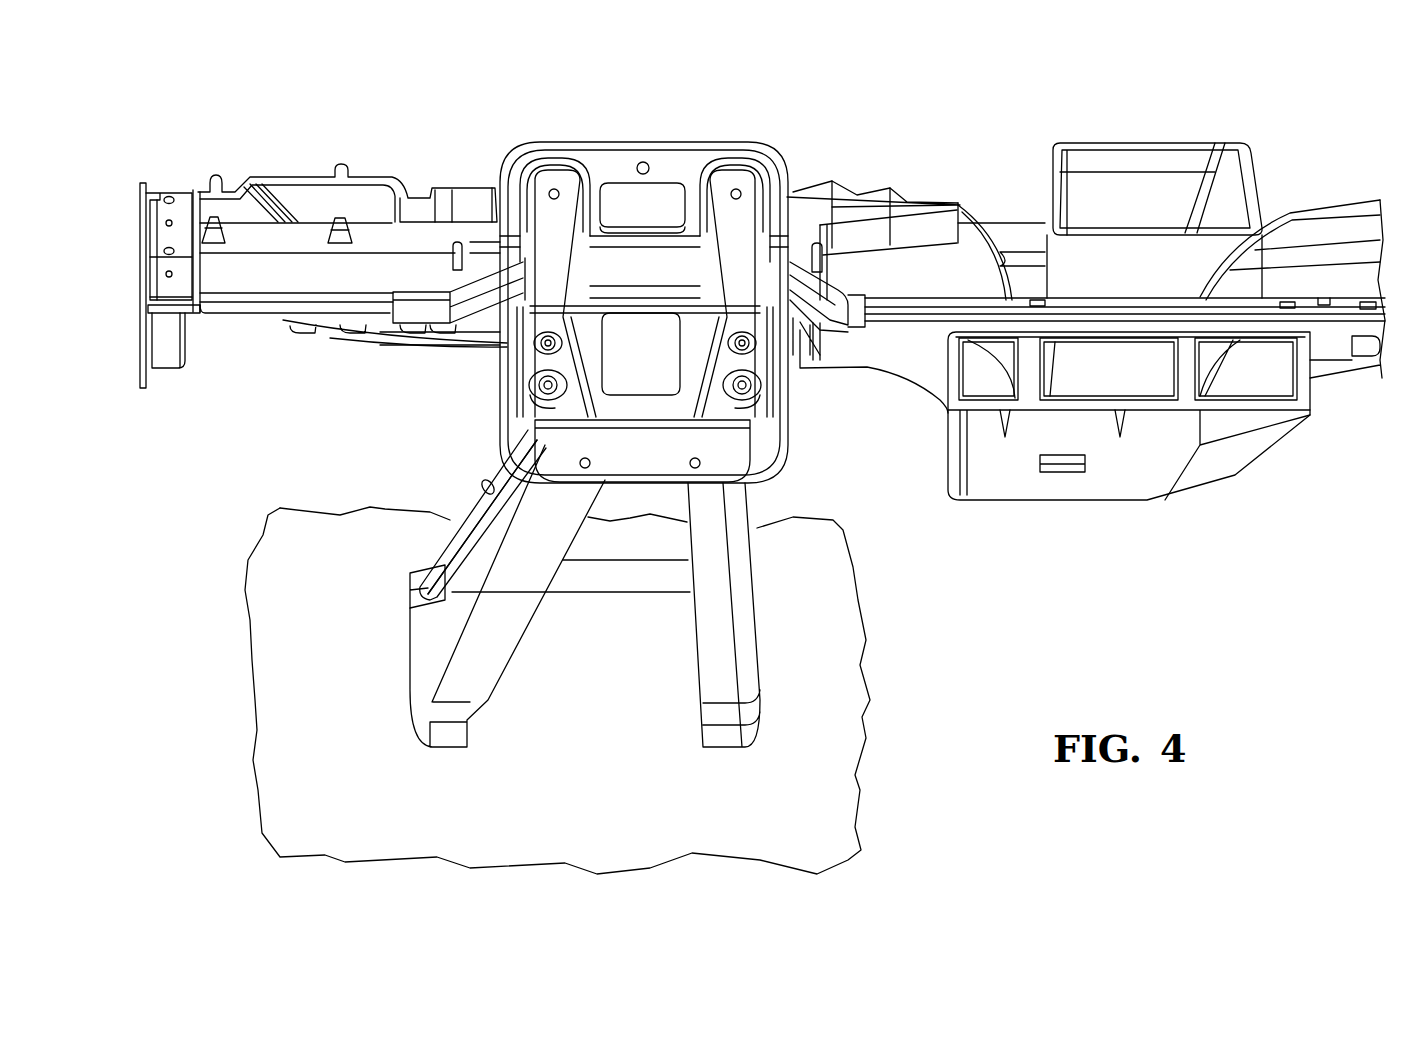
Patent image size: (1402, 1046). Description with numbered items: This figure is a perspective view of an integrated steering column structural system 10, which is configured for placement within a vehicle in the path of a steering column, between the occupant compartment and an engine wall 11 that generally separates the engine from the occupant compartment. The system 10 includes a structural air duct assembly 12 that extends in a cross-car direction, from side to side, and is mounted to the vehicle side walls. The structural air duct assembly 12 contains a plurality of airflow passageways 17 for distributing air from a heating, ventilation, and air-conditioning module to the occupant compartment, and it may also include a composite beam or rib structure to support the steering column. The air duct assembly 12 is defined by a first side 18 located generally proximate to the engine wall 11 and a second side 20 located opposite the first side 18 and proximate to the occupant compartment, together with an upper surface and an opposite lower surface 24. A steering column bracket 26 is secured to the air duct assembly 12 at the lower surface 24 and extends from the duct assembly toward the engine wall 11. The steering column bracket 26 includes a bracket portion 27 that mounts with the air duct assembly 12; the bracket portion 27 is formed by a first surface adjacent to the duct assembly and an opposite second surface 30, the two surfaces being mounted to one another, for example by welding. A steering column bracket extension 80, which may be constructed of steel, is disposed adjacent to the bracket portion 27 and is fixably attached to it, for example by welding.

The integrated steering column structural system 10 is at (192, 134).
The engine wall 11 is at (820, 785).
The structural air duct assembly 12 is at (912, 210).
The airflow passageways 17 is at (970, 385).
The first side 18 is at (1148, 502).
The second side 20 is at (1218, 142).
The lower surface 24 is at (262, 270).
The steering column bracket 26 is at (540, 142).
The bracket portion 27 is at (712, 140).
The second surface 30 is at (662, 462).
The steering column bracket extension 80 is at (487, 664).